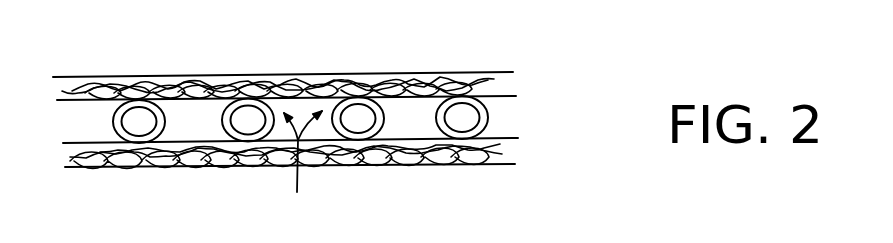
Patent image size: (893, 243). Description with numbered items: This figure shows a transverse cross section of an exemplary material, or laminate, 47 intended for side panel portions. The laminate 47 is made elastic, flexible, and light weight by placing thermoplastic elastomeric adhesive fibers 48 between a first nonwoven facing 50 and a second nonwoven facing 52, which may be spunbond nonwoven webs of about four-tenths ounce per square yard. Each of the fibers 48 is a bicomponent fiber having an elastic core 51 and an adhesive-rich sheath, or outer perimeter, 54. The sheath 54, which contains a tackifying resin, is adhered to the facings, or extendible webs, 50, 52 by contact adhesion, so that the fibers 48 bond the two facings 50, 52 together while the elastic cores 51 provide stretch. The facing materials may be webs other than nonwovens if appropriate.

The laminate 47 is at (323, 115).
The thermoplastic elastomeric adhesive fibers 48 is at (300, 167).
The first nonwoven facing 50 is at (498, 82).
The elastic core 51 is at (463, 118).
The second nonwoven facing 52 is at (513, 152).
The adhesive-rich sheath 54 is at (340, 157).